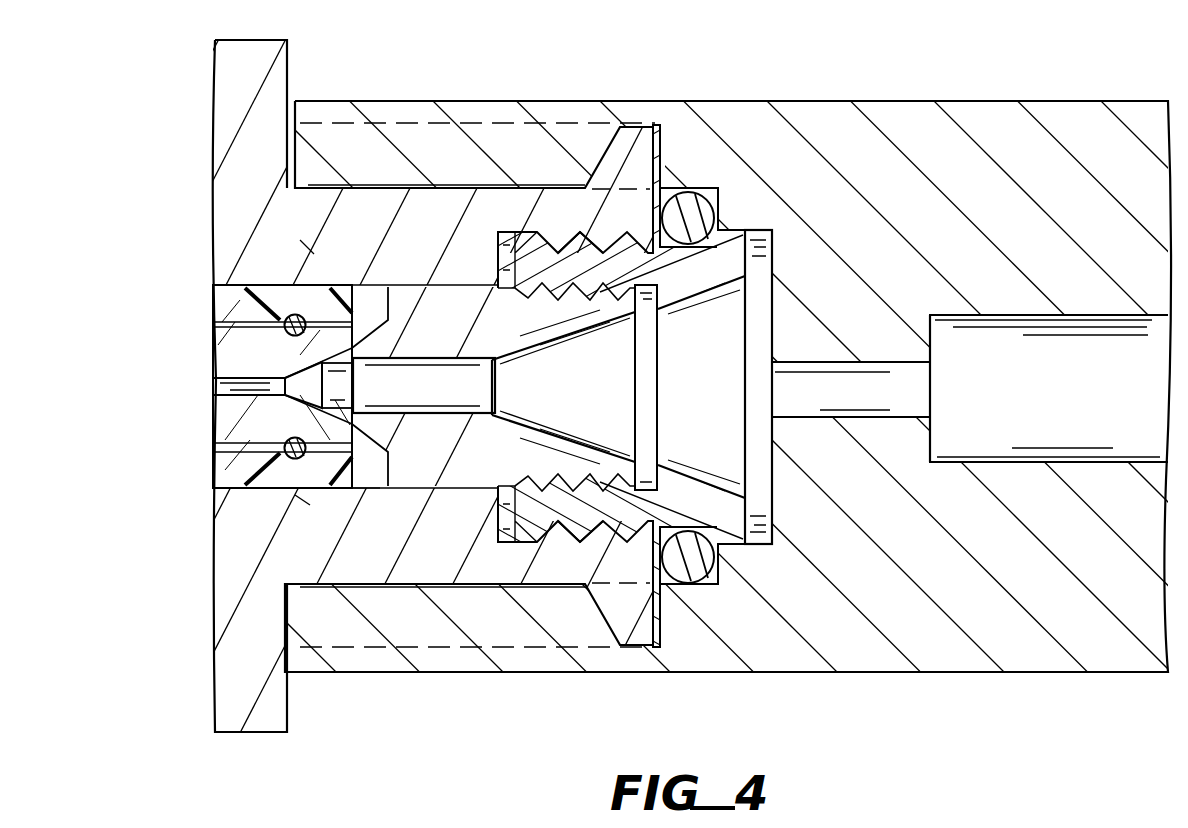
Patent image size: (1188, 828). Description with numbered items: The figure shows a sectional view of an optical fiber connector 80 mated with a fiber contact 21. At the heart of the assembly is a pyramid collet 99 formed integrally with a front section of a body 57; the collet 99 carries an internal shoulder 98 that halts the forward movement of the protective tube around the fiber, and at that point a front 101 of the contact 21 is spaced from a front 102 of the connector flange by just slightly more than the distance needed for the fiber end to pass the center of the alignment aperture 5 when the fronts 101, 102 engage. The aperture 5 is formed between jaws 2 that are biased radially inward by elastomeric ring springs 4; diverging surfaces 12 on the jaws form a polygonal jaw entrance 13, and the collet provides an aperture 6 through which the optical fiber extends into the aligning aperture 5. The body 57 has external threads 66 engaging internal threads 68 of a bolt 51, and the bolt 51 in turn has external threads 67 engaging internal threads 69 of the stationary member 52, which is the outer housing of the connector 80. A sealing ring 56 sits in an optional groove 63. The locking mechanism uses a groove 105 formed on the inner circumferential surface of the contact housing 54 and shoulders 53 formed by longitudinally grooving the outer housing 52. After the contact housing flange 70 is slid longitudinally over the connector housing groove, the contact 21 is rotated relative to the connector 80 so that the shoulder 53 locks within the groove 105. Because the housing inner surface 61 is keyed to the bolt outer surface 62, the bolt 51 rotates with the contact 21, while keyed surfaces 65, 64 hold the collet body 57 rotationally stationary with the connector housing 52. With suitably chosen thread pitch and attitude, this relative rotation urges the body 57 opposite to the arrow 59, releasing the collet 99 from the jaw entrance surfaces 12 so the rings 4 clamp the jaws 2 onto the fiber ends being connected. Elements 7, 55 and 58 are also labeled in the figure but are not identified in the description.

The jaws 2 is at (237, 348).
The elastomeric ring springs 4 is at (245, 300).
The fiber aligning aperture 5 is at (235, 387).
The aperture 6 is at (410, 401).
The nozzle block 7 is at (270, 293).
The surfaces 12 is at (298, 440).
The jaw entrance 13 is at (318, 398).
The fiber contact 21 is at (1038, 86).
The bolt 51 is at (560, 300).
The stationary member 52 is at (320, 542).
The shoulders 53 is at (625, 612).
The contact housing 54 is at (910, 195).
The piston rod 55 is at (1017, 423).
The sealing ring 56 is at (735, 520).
The body 57 is at (430, 217).
The conical plug and plate 58 is at (690, 401).
The arrow 59 is at (1015, 725).
The housing inner surface 61 is at (758, 225).
The bolt outer surface 62 is at (730, 552).
The groove 63 is at (712, 250).
The keyed surface 64 is at (365, 493).
The keyed surface 65 is at (498, 500).
The external threads 66 is at (600, 290).
The external threads 67 is at (557, 248).
The internal threads 68 is at (582, 482).
The internal threads 69 is at (560, 523).
The contact housing flange 70 is at (358, 137).
The connector 80 is at (592, 88).
The shoulder 98 is at (307, 247).
The pyramid collet 99 is at (300, 500).
The front of the contact 101 is at (288, 662).
The front of connector flange 102 is at (288, 133).
The groove 105 is at (653, 140).